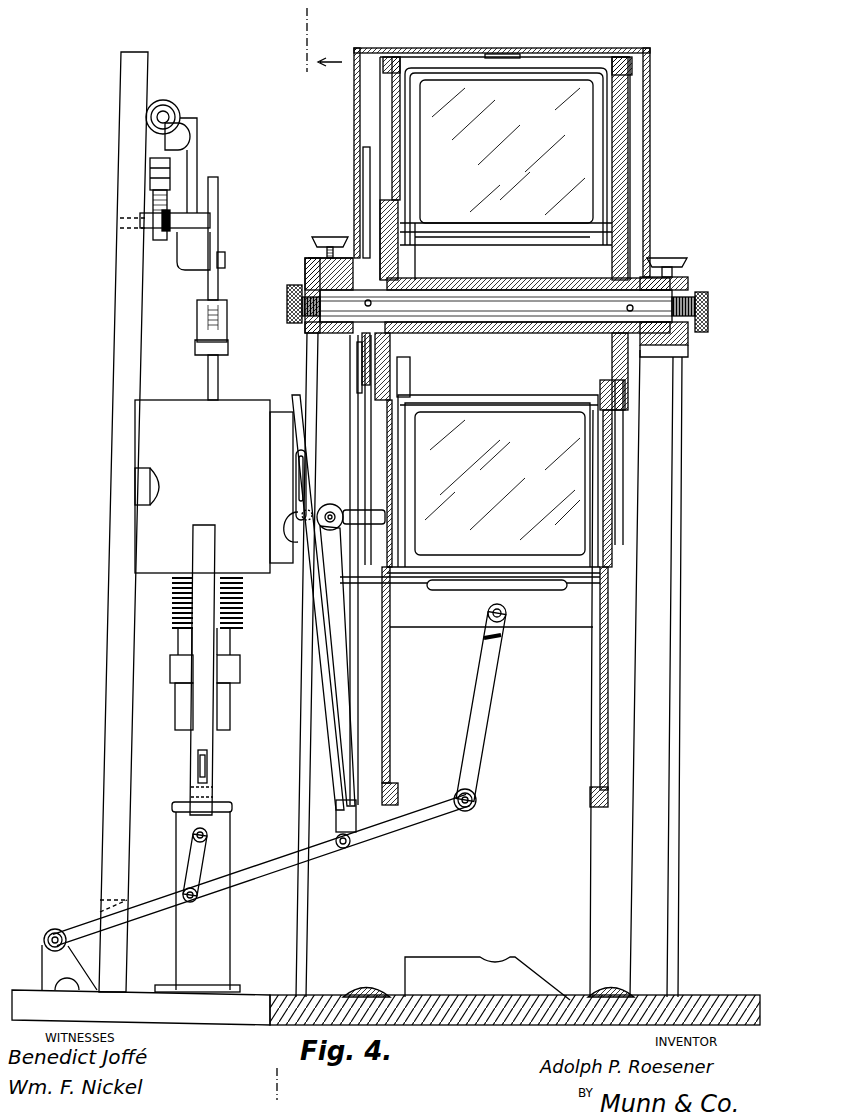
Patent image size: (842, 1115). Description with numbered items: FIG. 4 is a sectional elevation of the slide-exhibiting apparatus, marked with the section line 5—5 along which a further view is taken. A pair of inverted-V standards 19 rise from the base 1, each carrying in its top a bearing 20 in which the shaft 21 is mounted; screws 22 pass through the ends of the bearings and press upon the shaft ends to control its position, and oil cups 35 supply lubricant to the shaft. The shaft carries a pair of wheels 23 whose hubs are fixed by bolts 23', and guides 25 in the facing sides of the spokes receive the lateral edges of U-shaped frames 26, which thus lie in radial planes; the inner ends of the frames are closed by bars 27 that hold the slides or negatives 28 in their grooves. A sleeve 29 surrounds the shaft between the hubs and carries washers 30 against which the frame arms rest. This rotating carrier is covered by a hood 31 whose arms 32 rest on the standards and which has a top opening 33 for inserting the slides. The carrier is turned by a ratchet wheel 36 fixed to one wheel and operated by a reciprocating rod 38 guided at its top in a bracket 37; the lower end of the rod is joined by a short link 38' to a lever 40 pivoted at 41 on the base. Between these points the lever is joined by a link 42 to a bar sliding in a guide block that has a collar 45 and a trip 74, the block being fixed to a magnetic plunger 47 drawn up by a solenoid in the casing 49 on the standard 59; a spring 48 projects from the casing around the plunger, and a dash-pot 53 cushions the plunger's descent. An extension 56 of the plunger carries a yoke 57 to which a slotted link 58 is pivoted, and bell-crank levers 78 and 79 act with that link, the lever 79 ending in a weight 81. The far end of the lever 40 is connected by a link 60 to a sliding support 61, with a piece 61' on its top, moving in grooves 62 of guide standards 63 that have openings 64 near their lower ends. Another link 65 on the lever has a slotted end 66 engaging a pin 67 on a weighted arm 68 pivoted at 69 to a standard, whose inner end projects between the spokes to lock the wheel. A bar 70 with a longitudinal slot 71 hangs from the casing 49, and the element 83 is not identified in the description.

The base 1 is at (712, 1006).
The section line 5— 5 is at (309, 561).
The standards 19 is at (489, 665).
The bearing 20 is at (316, 275).
The shaft 21 is at (527, 312).
The screws 22 is at (292, 325).
The wheels 23 is at (502, 431).
The bolts 23' is at (499, 303).
The guides 25 is at (413, 57).
The U-shaped frames 26 is at (578, 66).
The bars 27 is at (540, 235).
The slides or negatives 28 is at (504, 317).
The sleeve 29 is at (470, 280).
The washer 30 is at (430, 335).
The hood 31 is at (352, 130).
The arms 32 is at (650, 143).
The opening 33 is at (488, 55).
The oil cups 35 is at (336, 236).
The ratchet wheel 36 is at (362, 370).
The bracket 37 is at (315, 257).
The reciprocating rod 38 is at (366, 570).
The short link 38' is at (384, 842).
The lever 40 is at (440, 815).
The pivot 41 is at (50, 932).
The link 42 is at (193, 865).
The collar 45 is at (240, 674).
The magnetic plunger 47 is at (232, 721).
The spring 48 is at (172, 630).
The casing 49 is at (214, 486).
The dash-pot 53 is at (197, 897).
The extension 56 is at (219, 385).
The yoke 57 is at (228, 334).
The slotted link 58 is at (220, 214).
The standard 59 is at (130, 353).
The link 60 is at (480, 741).
The sliding support 61 is at (470, 602).
The support top piece 61' is at (470, 599).
The grooves 62 is at (596, 721).
The guides or standards 63 is at (590, 806).
The longitudinal openings 64 is at (590, 906).
The link 65 is at (331, 824).
The slotted end 66 is at (310, 589).
The pin 67 is at (320, 506).
The weighted arm 68 is at (290, 500).
The pivot 69 is at (330, 531).
The bar 70 is at (190, 742).
The longitudinal slot 71 is at (210, 762).
The trip 74 is at (198, 767).
The bell-crank lever 78 is at (195, 138).
The bell-crank lever 79 is at (195, 263).
The weight 81 is at (180, 104).
The bolt 83 is at (172, 186).